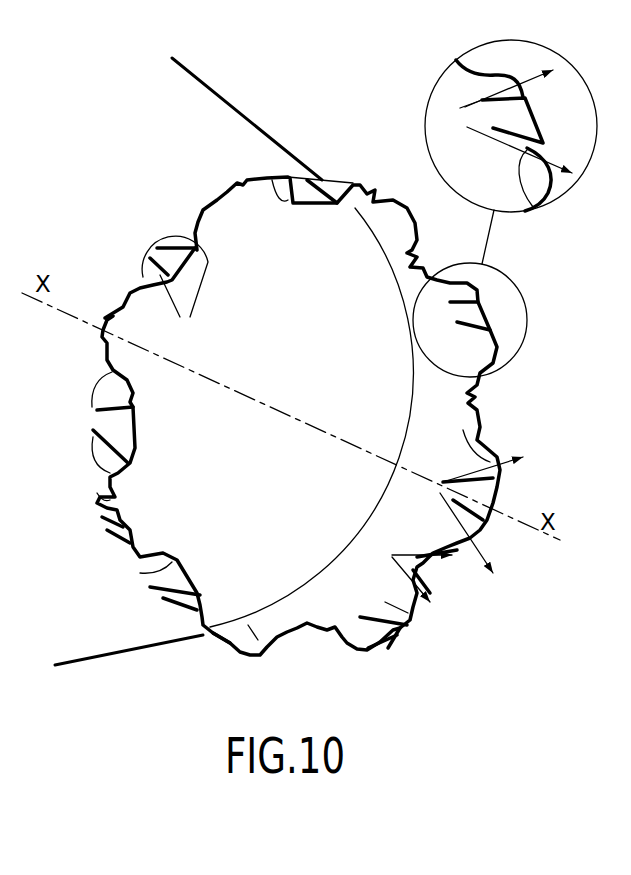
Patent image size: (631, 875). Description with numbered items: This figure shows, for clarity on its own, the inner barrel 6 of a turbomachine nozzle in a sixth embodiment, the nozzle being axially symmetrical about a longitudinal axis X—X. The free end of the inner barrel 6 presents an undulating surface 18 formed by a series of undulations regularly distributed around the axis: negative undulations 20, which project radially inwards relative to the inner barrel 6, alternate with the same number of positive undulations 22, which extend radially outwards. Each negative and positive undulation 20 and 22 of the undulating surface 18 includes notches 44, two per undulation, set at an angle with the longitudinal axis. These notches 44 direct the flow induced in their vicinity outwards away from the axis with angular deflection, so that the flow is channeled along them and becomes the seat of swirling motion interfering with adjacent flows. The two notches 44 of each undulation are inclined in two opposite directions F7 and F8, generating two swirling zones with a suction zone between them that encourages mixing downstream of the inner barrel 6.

The inner barrel 6 is at (221, 92).
The undulating surface 18 is at (284, 160).
The negative undulations 20 is at (154, 260).
The positive undulations 22 is at (100, 353).
The notches 44 is at (537, 200).
The first inclination direction F7 is at (527, 82).
The second inclination direction F8 is at (477, 132).